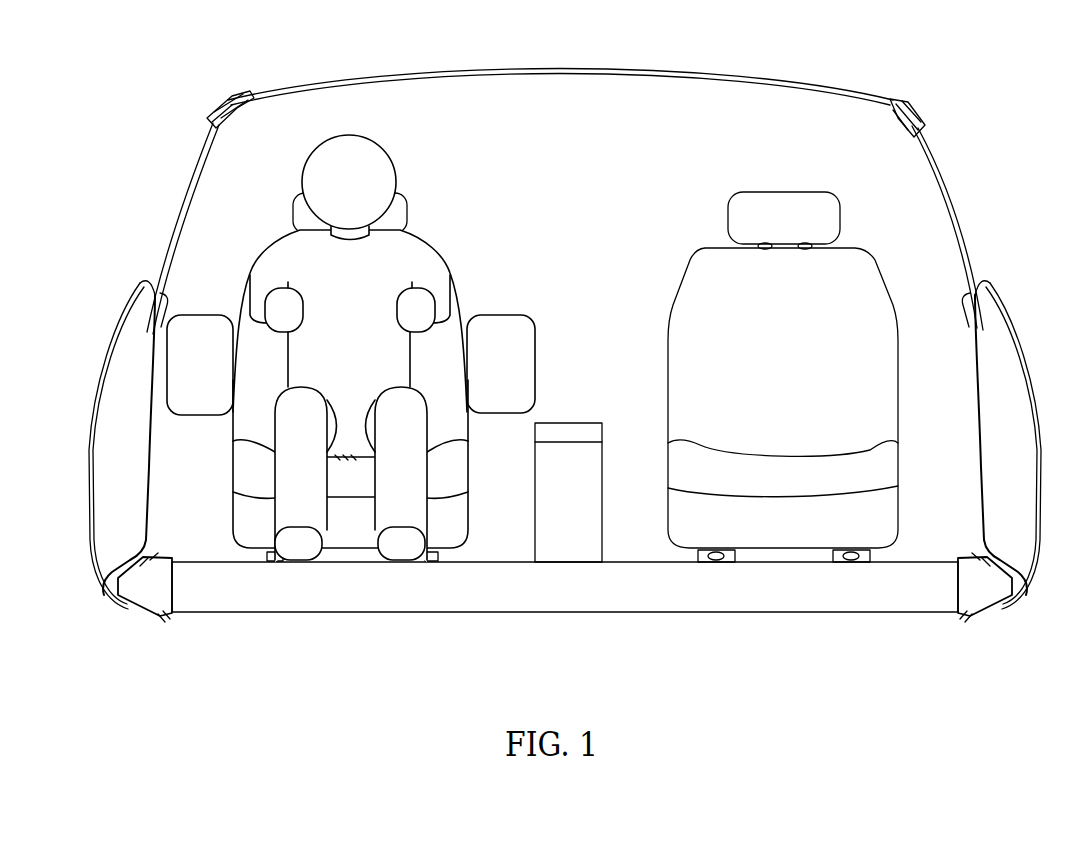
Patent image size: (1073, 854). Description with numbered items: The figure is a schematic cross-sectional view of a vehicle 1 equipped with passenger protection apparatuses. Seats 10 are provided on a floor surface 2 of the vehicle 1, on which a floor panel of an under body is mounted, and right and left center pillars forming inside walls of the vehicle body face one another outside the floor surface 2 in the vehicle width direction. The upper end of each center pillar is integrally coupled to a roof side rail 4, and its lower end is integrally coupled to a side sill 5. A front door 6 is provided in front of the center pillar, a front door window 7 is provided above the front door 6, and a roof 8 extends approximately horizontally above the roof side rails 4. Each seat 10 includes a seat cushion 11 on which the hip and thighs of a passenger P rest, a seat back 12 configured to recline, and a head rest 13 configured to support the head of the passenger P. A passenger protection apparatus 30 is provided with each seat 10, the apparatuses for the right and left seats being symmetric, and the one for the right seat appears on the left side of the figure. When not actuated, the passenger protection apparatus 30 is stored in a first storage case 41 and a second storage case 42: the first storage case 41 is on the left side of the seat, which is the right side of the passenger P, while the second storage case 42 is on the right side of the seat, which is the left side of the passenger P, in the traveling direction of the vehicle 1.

The vehicle 1 is at (555, 186).
The floor surface 2 is at (267, 600).
The roof side rail 4 is at (218, 112).
The side sill 5 is at (145, 595).
The front door 6 is at (110, 518).
The front door window 7 is at (180, 200).
The roof 8 is at (257, 90).
The seat 10 is at (437, 377).
The seat cushion 11 is at (411, 463).
The seat back 12 is at (450, 322).
The head rest 13 is at (405, 216).
The passenger protection apparatus 30 is at (351, 499).
The first storage case 41 is at (522, 403).
The second storage case 42 is at (199, 405).
The passenger P is at (380, 182).